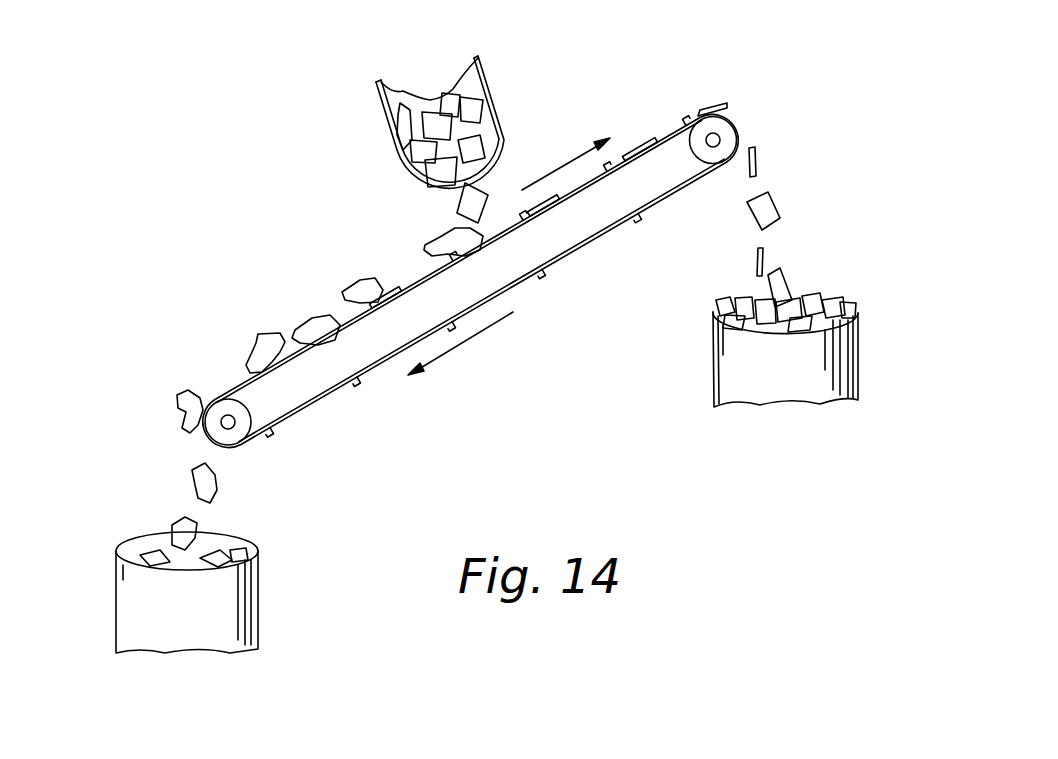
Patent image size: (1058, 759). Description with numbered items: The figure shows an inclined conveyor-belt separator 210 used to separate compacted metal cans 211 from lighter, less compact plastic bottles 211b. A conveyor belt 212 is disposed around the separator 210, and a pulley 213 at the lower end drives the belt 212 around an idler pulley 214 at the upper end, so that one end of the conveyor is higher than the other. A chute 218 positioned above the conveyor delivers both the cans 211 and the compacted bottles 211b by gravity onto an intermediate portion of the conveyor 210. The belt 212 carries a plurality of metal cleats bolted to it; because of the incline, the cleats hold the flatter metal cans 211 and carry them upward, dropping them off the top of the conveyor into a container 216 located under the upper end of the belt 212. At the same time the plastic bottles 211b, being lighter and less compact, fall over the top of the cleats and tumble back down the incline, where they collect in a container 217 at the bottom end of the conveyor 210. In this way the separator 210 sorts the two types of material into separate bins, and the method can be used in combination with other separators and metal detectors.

The separator 210 is at (800, 43).
The metal cans 211 is at (428, 112).
The plastic bottles 211b is at (403, 138).
The conveyor belt 212 is at (613, 230).
The pulley 213 is at (245, 410).
The idler pulley 214 is at (736, 130).
The container 216 is at (722, 375).
The container 217 is at (235, 595).
The chute 218 is at (482, 78).